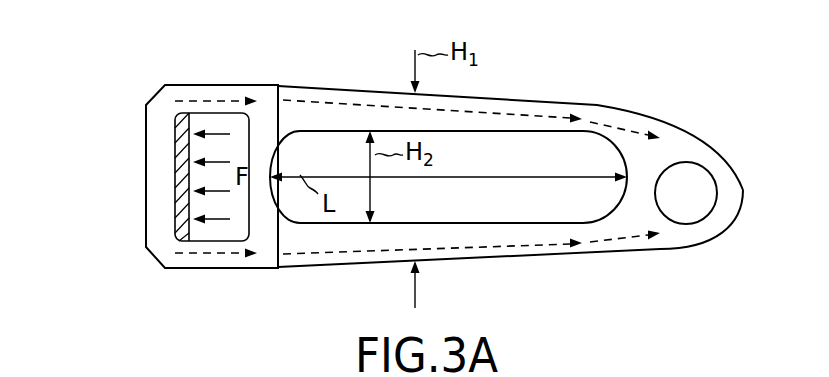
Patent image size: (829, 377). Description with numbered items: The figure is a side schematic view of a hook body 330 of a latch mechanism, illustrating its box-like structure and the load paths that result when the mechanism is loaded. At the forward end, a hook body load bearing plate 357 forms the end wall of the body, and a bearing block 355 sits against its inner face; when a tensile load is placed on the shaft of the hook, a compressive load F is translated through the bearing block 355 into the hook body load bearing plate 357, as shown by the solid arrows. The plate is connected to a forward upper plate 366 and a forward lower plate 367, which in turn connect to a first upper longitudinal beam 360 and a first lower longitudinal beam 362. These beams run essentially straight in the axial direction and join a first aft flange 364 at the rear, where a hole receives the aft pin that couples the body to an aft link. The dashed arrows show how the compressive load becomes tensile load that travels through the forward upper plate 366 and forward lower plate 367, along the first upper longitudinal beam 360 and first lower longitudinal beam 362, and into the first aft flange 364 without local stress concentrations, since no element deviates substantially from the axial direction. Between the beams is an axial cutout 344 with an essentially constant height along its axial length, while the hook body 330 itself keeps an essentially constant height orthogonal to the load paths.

The hook body 330 is at (130, 76).
The axial cutout 344 is at (613, 213).
The bearing block 355 is at (180, 211).
The hook body load bearing plate 357 is at (151, 126).
The first upper longitudinal beam 360 is at (323, 87).
The first lower longitudinal beam 362 is at (300, 268).
The first aft flange 364 is at (717, 232).
The forward upper plate 366 is at (213, 86).
The forward lower plate 367 is at (205, 268).